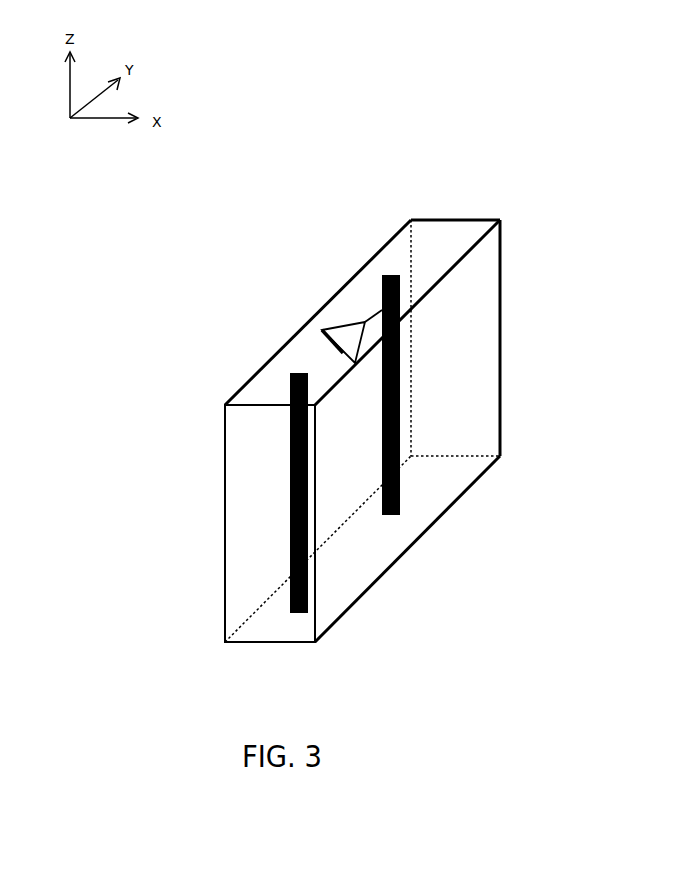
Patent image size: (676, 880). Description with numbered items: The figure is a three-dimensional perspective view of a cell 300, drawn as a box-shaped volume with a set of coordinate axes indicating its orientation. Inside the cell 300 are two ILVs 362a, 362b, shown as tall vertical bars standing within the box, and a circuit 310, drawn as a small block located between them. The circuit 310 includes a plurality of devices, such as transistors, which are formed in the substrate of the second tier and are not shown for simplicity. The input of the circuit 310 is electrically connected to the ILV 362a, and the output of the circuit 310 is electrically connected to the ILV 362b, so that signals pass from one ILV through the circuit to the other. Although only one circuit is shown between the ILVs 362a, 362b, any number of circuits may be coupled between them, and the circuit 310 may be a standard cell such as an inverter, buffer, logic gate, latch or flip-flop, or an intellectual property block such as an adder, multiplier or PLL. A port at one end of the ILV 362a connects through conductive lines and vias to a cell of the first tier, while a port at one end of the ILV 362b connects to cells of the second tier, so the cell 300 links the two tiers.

The cell 300 is at (568, 164).
The circuit 310 is at (322, 330).
The ILV 362a is at (290, 492).
The ILV 362b is at (400, 422).